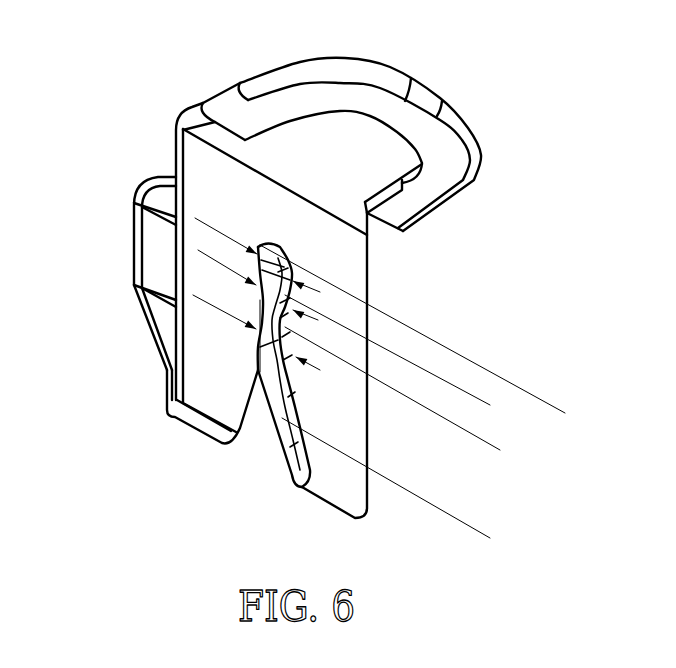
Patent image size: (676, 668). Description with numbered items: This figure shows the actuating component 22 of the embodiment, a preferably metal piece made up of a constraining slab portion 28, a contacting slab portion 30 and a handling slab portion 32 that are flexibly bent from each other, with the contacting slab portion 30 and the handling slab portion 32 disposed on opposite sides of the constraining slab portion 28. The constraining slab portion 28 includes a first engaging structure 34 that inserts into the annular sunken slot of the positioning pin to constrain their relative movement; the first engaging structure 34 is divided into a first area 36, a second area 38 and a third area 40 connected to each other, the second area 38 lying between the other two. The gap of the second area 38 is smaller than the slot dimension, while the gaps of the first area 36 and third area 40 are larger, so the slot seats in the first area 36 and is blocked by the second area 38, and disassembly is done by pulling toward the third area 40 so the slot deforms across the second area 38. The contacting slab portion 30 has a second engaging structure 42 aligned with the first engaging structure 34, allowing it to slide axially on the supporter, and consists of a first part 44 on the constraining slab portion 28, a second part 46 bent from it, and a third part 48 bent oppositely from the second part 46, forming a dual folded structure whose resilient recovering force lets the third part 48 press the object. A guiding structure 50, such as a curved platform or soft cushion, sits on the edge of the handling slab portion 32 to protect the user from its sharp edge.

The actuating component 22 is at (548, 103).
The constraining slab portion 28 is at (200, 163).
The contacting slab portion 30 is at (62, 222).
The handling slab portion 32 is at (382, 163).
The first engaging structure 34 is at (549, 405).
The first area 36 is at (455, 328).
The second area 38 is at (486, 378).
The third area 40 is at (487, 442).
The second engaging structure 42 is at (257, 442).
The first part 44 is at (167, 384).
The second part 46 is at (150, 319).
The third part 48 is at (138, 232).
The guiding structure 50 is at (391, 82).